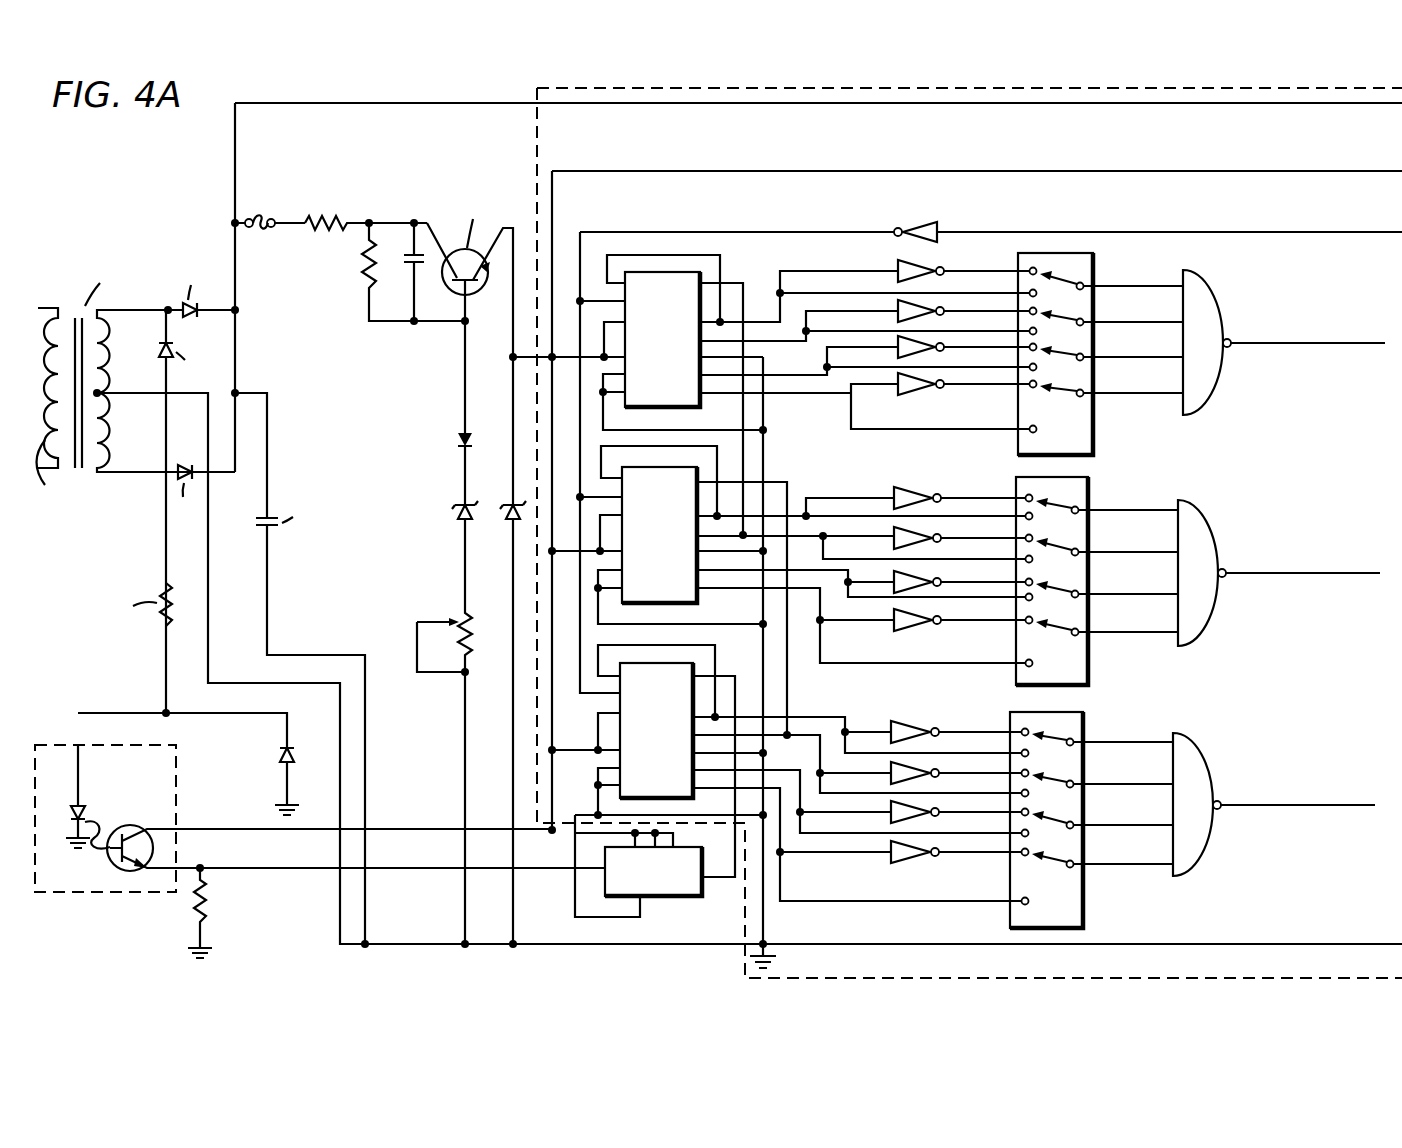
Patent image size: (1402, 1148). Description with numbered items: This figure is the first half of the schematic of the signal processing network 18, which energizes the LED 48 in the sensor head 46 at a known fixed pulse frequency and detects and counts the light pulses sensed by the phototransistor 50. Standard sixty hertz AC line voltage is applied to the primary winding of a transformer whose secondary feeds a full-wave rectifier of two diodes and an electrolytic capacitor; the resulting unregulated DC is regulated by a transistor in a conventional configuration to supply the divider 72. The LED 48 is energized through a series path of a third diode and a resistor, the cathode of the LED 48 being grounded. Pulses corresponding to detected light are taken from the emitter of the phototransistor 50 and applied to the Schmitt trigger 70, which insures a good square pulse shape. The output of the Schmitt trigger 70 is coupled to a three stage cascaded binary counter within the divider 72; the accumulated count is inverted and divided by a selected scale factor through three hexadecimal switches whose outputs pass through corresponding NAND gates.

The signal processing network 18 is at (216, 198).
The sensor head 46 is at (57, 745).
The LED 48 is at (86, 809).
The phototransistor 50 is at (140, 824).
The Schmitt trigger 70 is at (682, 901).
The divider 72 is at (553, 92).